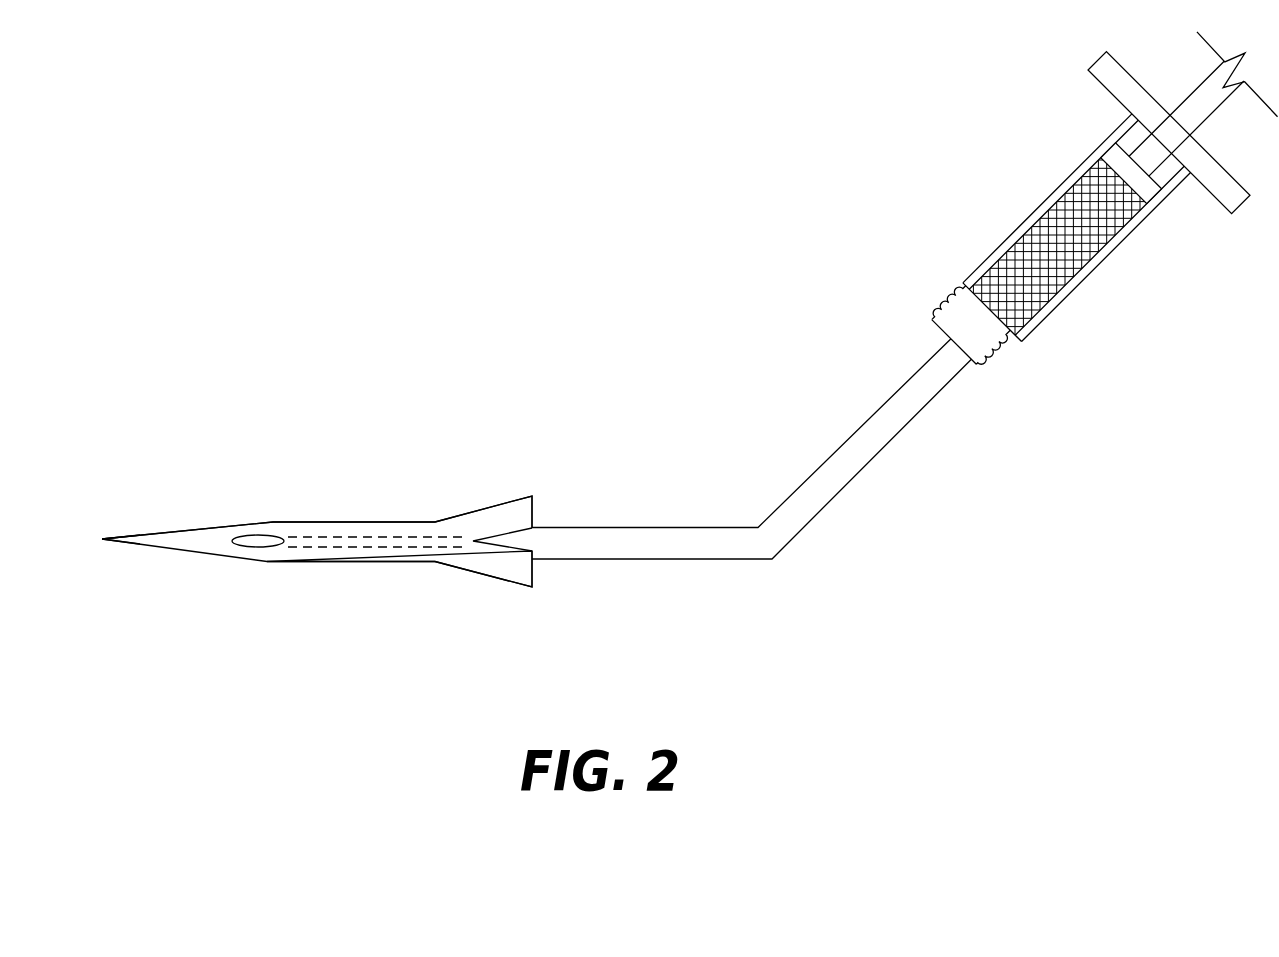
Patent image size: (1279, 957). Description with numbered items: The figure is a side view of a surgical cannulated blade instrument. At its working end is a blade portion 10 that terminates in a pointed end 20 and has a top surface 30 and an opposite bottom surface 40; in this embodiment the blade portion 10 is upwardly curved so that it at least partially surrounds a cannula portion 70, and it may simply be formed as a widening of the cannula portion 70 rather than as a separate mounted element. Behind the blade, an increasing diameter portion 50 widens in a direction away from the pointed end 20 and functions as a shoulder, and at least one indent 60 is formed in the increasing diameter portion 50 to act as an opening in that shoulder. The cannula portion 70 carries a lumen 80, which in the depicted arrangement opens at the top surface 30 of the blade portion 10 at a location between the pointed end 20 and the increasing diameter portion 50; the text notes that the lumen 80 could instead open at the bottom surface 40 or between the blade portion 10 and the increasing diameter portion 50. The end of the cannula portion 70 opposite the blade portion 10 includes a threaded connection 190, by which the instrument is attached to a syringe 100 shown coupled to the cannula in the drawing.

The blade portion 10 is at (188, 530).
The pointed end 20 is at (103, 541).
The top surface 30 is at (214, 528).
The bottom surface 40 is at (254, 561).
The increasing diameter portion 50 is at (487, 507).
The indent 60 is at (524, 534).
The cannula portion 70 is at (718, 560).
The lumen 80 is at (269, 536).
The syringe 100 is at (1110, 242).
The threaded connection 190 is at (1000, 346).